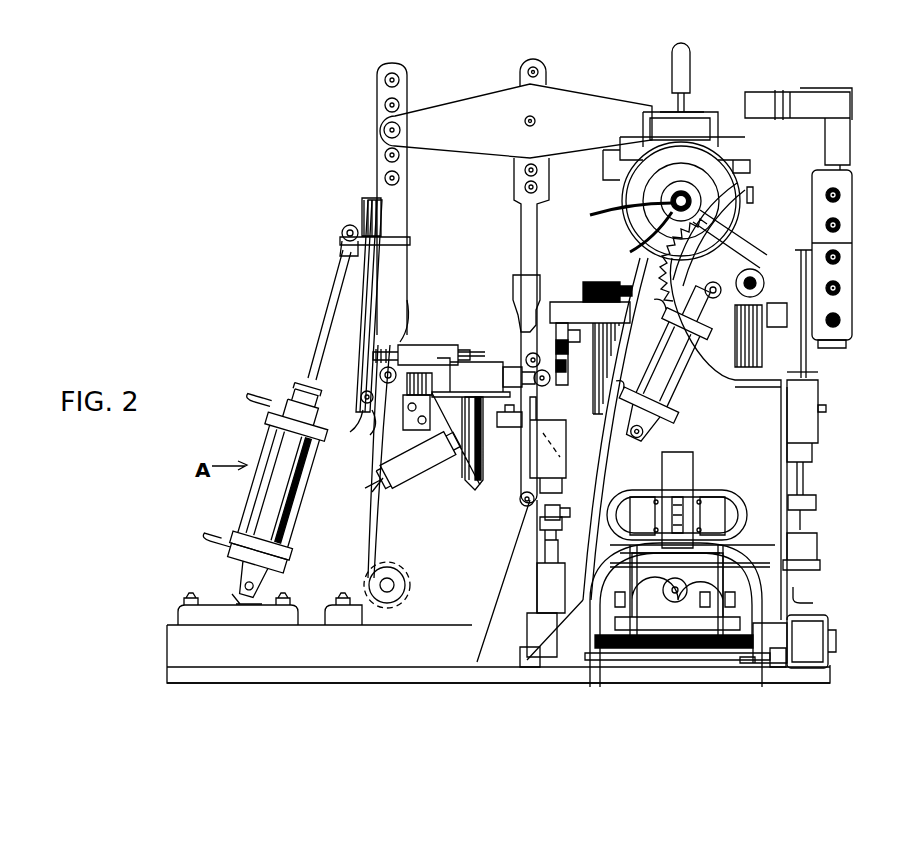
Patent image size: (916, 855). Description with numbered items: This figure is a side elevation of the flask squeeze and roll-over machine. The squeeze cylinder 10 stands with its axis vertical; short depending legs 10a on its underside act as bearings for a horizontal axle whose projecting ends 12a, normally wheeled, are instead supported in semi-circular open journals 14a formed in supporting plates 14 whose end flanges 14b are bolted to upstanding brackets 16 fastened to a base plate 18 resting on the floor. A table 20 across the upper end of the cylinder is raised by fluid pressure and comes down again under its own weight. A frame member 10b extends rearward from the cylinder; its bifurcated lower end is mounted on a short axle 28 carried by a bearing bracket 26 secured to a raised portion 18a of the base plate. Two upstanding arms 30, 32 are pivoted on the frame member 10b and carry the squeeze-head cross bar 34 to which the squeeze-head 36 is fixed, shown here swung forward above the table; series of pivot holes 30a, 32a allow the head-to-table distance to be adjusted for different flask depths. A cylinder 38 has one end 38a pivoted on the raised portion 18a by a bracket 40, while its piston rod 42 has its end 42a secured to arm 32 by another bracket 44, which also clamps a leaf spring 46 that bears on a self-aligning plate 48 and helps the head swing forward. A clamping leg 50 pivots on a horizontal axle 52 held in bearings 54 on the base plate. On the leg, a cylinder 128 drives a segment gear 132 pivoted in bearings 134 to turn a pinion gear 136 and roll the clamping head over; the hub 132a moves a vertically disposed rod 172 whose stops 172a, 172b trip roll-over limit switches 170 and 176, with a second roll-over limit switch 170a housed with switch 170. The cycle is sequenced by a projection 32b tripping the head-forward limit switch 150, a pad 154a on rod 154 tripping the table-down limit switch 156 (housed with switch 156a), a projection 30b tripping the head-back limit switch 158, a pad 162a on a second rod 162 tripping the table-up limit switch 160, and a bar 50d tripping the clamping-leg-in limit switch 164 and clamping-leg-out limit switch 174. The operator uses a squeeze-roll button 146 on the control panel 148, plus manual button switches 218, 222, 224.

The squeeze cylinder 10 is at (735, 550).
The depending legs 10a is at (720, 564).
The frame member 10b is at (372, 517).
The axle ends 12a is at (674, 602).
The supporting plates 14 is at (690, 612).
The semi-circular open journals 14a is at (676, 615).
The end flanges 14b is at (720, 607).
The upstanding brackets 16 is at (718, 580).
The base plate 18 is at (722, 683).
The raised portion 18a is at (395, 655).
The table 20 is at (577, 303).
The bearing bracket 26 is at (368, 588).
The short axle 28 is at (385, 583).
The upstanding arm 30 is at (518, 233).
The pivot holes 30a is at (524, 187).
The projection 30b is at (475, 480).
The upstanding arm 32 is at (400, 208).
The pivot holes 32a is at (400, 82).
The projection 32b is at (402, 340).
The squeeze-head cross bar 34 is at (598, 102).
The squeeze-head 36 is at (618, 168).
The cylinder 38 is at (290, 436).
The cylinder end 38a is at (235, 584).
The bracket 40 is at (178, 612).
The piston rod 42 is at (325, 322).
The piston rod end 42a is at (342, 242).
The bracket 44 is at (362, 210).
The leaf spring 46 is at (368, 297).
The self-aligning plate 48 is at (366, 420).
The clamping leg 50 is at (632, 460).
The bar 50d is at (545, 510).
The horizontal axle 52 is at (765, 663).
The bearings 54 is at (525, 658).
The cylinder 128 is at (672, 398).
The segment gear 132 is at (735, 205).
The hub 132a is at (852, 240).
The bearings 134 is at (770, 275).
The pinion gear 136 is at (700, 206).
The squeeze-roll button 146 is at (840, 195).
The control panel 148 is at (852, 212).
The head-forward limit switch 150 is at (437, 345).
The rod 154 is at (600, 282).
The pad 154a is at (545, 352).
The table-down limit switch 156 is at (488, 345).
The table-down limit switch 156a is at (430, 430).
The head-back limit switch 158 is at (445, 468).
The table-up limit switch 160 is at (513, 290).
The second rod 162 is at (618, 358).
The pad 162a is at (580, 430).
The clamping-leg-in limit switch 164 is at (545, 585).
The roll-over limit switch 170 is at (818, 400).
The second roll-over limit switch 170a is at (820, 384).
The rod 172 is at (808, 362).
The stop 172a is at (828, 410).
The second stop 172b is at (818, 503).
The clamping-leg-out limit switch 174 is at (583, 455).
The roll-over limit switch 176 is at (820, 520).
The button switch 218 is at (826, 222).
The button switch 222 is at (841, 257).
The button switch 224 is at (841, 288).